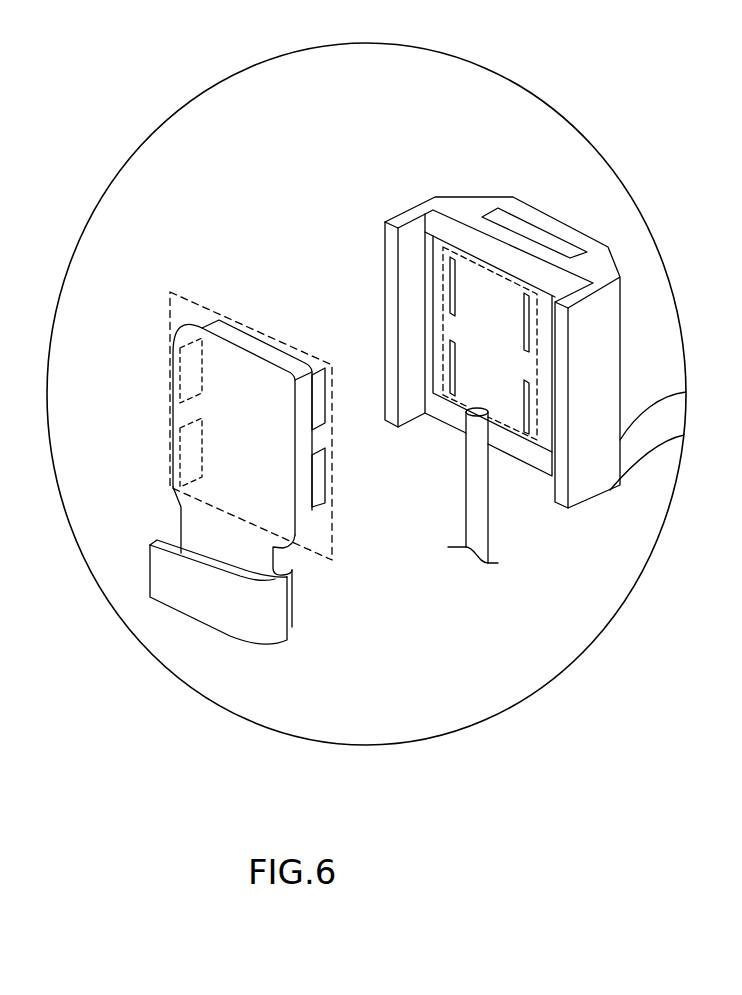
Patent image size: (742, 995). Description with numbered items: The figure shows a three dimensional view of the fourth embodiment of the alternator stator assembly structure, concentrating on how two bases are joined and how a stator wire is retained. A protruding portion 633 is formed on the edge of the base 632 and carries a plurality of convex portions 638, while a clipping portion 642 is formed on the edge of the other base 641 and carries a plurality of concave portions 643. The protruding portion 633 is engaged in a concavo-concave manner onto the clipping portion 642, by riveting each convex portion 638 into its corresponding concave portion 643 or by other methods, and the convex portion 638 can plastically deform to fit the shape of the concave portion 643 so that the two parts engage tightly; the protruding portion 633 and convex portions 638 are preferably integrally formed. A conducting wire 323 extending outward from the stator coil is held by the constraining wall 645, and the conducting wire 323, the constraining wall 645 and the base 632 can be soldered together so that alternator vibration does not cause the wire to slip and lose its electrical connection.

The base 632 is at (232, 335).
The protruding portion 633 is at (333, 556).
The convex portion 638 is at (320, 378).
The base 641 is at (462, 235).
The clipping portion 642 is at (413, 208).
The concave portion 643 is at (448, 293).
The constraining wall 645 is at (228, 602).
The conducting wire 323 is at (477, 490).